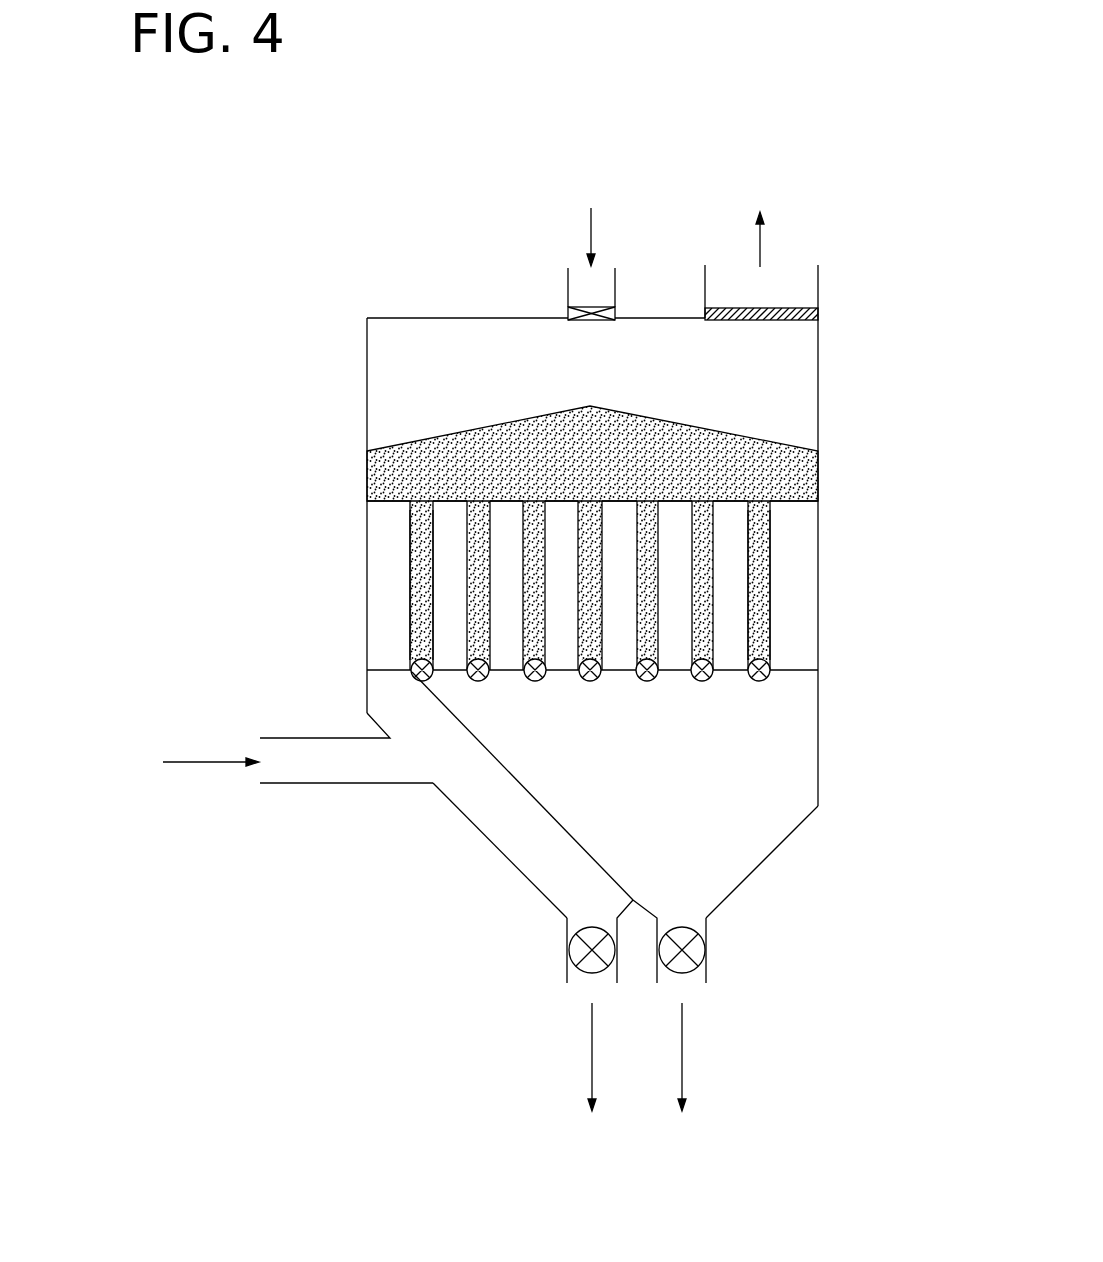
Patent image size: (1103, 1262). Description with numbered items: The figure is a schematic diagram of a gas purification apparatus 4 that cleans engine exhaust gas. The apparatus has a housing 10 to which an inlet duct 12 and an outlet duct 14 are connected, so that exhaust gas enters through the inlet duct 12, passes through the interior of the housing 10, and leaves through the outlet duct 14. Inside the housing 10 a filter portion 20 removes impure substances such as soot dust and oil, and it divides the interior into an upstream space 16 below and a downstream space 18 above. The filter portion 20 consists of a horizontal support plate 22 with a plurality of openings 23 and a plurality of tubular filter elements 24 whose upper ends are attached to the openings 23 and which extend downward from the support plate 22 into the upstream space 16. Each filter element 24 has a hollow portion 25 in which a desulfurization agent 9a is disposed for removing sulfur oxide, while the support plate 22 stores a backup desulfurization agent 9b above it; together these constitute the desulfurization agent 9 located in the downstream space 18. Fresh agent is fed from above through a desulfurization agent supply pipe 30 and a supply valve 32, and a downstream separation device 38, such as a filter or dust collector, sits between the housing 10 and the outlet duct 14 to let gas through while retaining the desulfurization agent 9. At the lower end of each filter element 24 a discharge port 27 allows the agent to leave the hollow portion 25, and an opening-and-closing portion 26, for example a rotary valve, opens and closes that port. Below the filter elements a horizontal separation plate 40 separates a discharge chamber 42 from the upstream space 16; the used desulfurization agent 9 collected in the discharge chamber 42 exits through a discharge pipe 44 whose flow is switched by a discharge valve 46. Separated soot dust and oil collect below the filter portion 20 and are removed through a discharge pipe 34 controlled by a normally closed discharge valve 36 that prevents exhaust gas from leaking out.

The gas purification apparatus 4 is at (955, 184).
The desulfurization agent 9 is at (594, 533).
The desulfurization agent 9a is at (418, 547).
The backup desulfurization agent 9b is at (773, 452).
The housing 10 is at (379, 318).
The inlet duct 12 is at (283, 736).
The outlet duct 14 is at (819, 288).
The upstream space 16 is at (478, 790).
The downstream space 18 is at (443, 361).
The filter portion 20 is at (797, 572).
The support plate 22 is at (793, 502).
The opening 23 is at (405, 497).
The filter element 24 is at (412, 587).
The hollow portion 25 is at (420, 615).
The opening-and-closing portion 26 is at (412, 670).
The discharge port 27 is at (537, 682).
The desulfurization agent supply pipe 30 is at (567, 282).
The supply valve 32 is at (616, 317).
The discharge pipe 34 is at (567, 975).
The discharge valve 36 is at (569, 950).
The downstream separation device 38 is at (781, 321).
The separation plate 40 is at (793, 672).
The discharge chamber 42 is at (684, 775).
The discharge pipe 44 is at (707, 975).
The discharge valve 46 is at (707, 948).